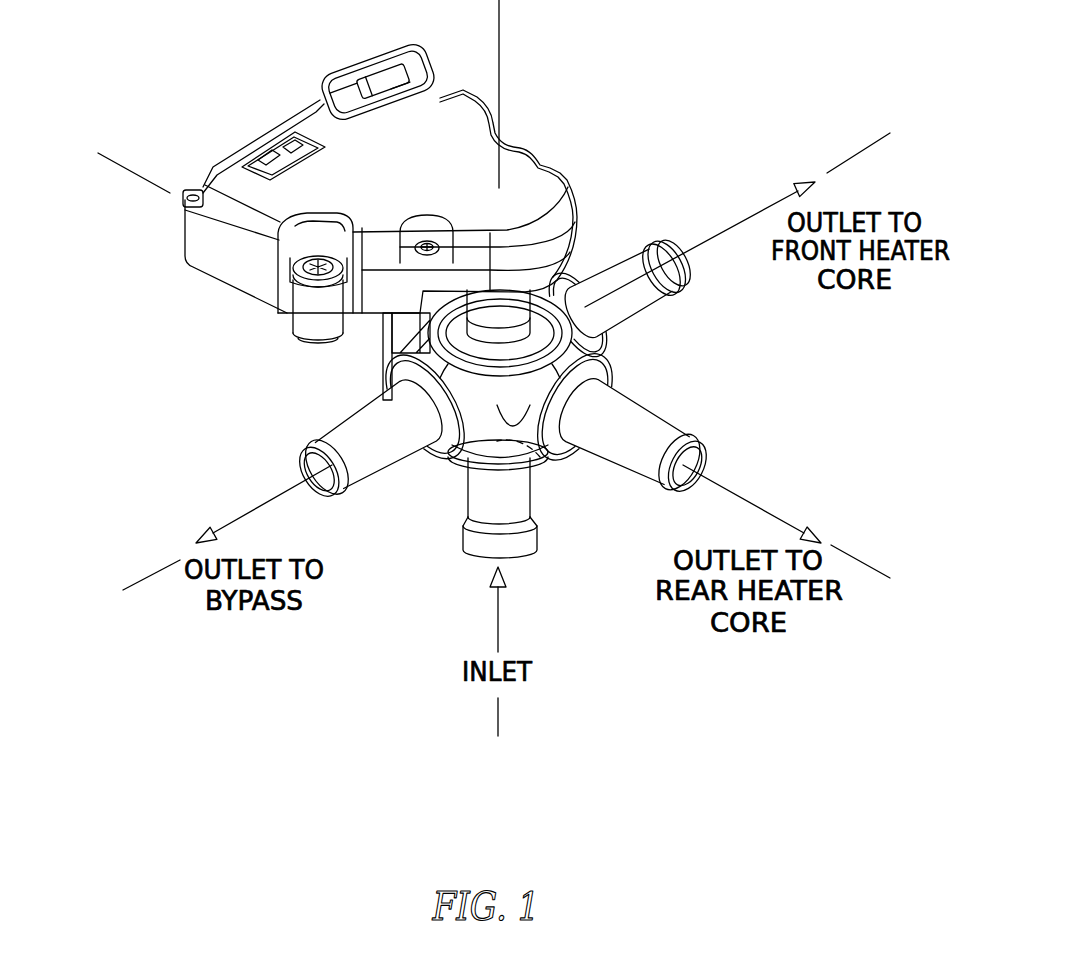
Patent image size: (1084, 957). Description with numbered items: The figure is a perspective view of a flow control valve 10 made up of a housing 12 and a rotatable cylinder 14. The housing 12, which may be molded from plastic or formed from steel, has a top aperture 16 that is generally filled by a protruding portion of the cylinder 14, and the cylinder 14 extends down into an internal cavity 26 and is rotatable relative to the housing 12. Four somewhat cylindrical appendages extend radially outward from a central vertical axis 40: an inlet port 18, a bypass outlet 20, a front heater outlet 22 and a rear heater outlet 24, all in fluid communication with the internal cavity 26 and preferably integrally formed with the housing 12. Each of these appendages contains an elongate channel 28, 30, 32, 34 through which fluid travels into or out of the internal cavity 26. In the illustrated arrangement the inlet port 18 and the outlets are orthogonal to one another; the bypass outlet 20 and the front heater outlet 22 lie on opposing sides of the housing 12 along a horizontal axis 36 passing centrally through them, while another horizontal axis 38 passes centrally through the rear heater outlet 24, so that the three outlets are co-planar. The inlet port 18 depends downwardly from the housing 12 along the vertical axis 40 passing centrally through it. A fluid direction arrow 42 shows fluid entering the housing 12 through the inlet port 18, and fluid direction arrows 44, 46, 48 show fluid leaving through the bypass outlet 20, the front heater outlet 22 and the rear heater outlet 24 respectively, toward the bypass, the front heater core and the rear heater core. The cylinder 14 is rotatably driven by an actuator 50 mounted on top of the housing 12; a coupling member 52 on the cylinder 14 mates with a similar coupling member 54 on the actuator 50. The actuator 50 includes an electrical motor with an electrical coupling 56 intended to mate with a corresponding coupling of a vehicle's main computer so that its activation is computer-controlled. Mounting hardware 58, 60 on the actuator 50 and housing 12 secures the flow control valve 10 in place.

The flow control valve 10 is at (660, 80).
The housing 12 is at (449, 467).
The rotatable cylinder 14 is at (423, 340).
The top aperture 16 is at (622, 368).
The inlet port 18 is at (470, 500).
The bypass outlet 20 is at (343, 412).
The front heater outlet 22 is at (616, 262).
The rear heater outlet 24 is at (650, 411).
The internal cavity 26 is at (540, 457).
The elongate channel 28 is at (512, 562).
The elongate channel 30 is at (318, 462).
The elongate channel 32 is at (689, 243).
The elongate channel 34 is at (685, 460).
The horizontal axis 36 is at (857, 155).
The horizontal axis 38 is at (127, 173).
The vertical axis 40 is at (505, 46).
The fluid direction arrow 42 is at (497, 603).
The fluid direction arrow 44 is at (247, 513).
The fluid direction arrow 46 is at (737, 226).
The fluid direction arrow 48 is at (772, 512).
The actuator 50 is at (204, 271).
The coupling member 52 is at (603, 307).
The coupling member 54 is at (558, 290).
The electrical coupling 56 is at (362, 84).
The mounting hardware 58 is at (292, 338).
The mounting hardware 60 is at (405, 340).